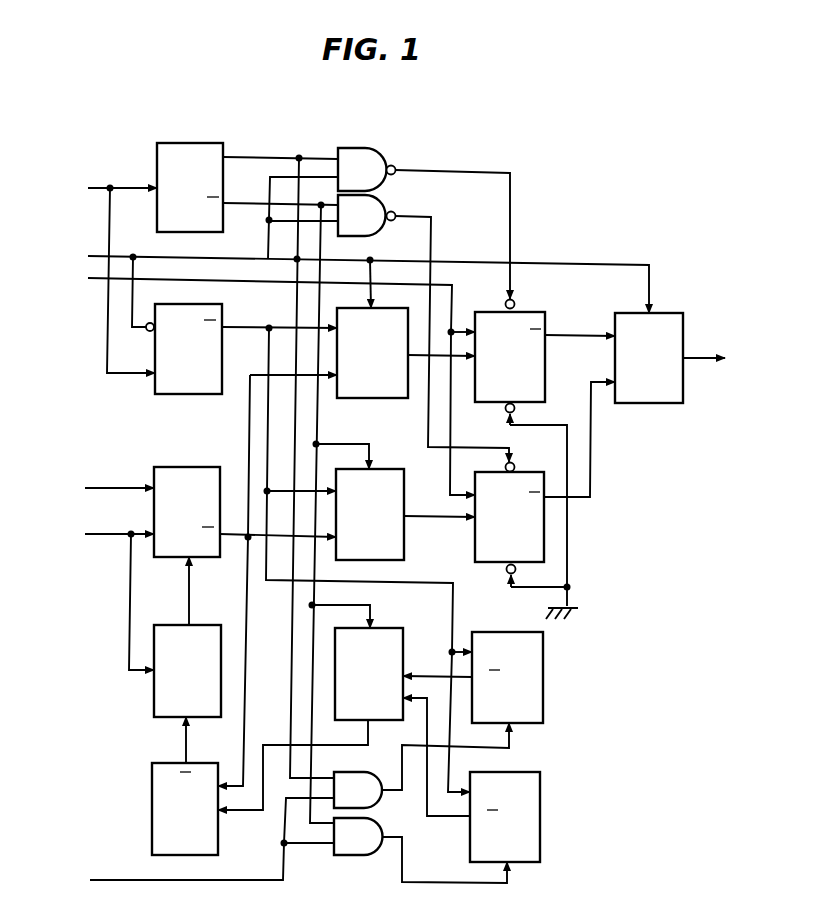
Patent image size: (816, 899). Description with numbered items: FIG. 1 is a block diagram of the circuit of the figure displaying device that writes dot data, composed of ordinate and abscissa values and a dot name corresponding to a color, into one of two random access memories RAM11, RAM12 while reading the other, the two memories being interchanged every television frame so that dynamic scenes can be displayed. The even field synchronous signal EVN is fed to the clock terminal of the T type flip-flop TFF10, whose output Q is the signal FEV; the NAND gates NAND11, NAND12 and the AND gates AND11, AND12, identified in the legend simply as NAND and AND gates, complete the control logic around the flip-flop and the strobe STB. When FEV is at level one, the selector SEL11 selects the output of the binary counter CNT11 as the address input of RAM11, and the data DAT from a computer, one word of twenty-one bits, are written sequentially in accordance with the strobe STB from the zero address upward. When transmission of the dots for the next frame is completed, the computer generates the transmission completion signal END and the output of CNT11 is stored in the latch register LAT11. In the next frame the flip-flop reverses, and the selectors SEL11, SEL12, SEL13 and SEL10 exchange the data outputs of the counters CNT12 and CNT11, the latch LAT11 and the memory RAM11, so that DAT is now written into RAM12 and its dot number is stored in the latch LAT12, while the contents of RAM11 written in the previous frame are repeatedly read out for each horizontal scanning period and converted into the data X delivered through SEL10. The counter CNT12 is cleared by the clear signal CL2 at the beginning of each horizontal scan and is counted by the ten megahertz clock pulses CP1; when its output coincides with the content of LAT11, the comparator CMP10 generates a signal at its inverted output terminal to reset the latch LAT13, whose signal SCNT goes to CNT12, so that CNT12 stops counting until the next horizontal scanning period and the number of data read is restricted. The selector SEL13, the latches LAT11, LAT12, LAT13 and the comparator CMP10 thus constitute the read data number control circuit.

The T type flip-flop TFF10 is at (188, 143).
The NAND gate NAND11 is at (380, 150).
The NAND gate NAND12 is at (380, 200).
The binary counter CNT11 is at (192, 394).
The binary counter CNT12 is at (188, 467).
The data selector SEL10 is at (674, 313).
The data selector SEL11 is at (369, 398).
The data selector SEL12 is at (421, 469).
The data selector SEL13 is at (398, 628).
The random access memory RAM11 is at (530, 312).
The random access memory RAM12 is at (544, 527).
The latch register LAT11 is at (543, 683).
The latch register LAT12 is at (540, 803).
The latch register LAT13 is at (154, 690).
The comparator CMP10 is at (152, 764).
The AND gate AND11 is at (368, 766).
The AND gate AND12 is at (355, 856).
The even field synchronous signal EVN is at (61, 189).
The strobe STB is at (60, 257).
The data DAT is at (61, 280).
The flip-flop output signal FEV is at (253, 157).
The clock pulses CP1 is at (60, 489).
The clear signal CL2 is at (56, 535).
The scan count signal SCNT is at (189, 598).
The transmission completion signal END is at (58, 881).
The data X is at (739, 359).